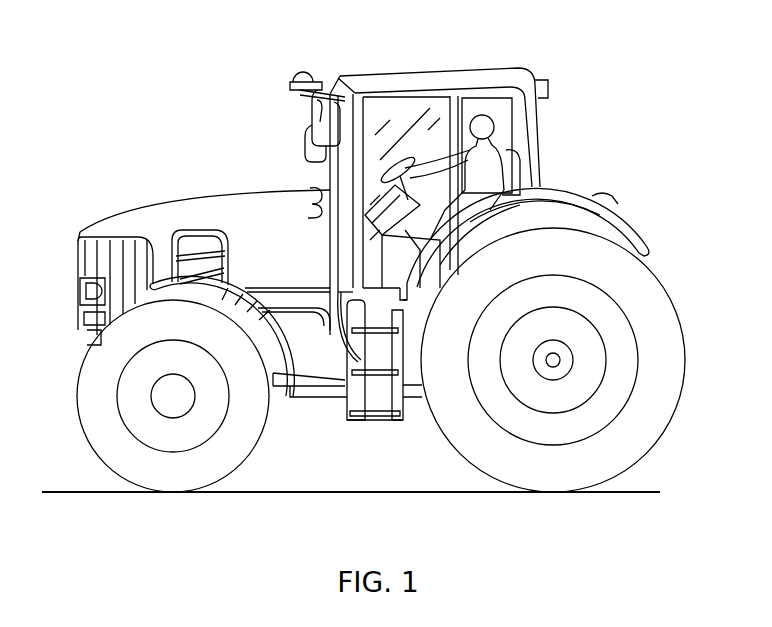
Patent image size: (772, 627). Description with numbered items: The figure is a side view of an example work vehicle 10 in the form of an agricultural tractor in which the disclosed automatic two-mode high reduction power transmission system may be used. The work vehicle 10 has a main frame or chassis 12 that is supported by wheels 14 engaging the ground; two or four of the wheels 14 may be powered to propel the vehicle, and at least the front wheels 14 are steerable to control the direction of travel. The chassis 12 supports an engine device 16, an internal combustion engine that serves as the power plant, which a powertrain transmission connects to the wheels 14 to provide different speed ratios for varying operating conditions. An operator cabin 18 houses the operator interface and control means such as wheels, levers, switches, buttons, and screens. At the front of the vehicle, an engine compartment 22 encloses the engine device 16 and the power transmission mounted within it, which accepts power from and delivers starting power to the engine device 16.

The work vehicle 10 is at (522, 59).
The main frame or chassis 12 is at (281, 390).
The wheels 14 is at (162, 398).
The engine device 16 is at (148, 272).
The operator cabin 18 is at (396, 76).
The engine compartment 22 is at (160, 230).